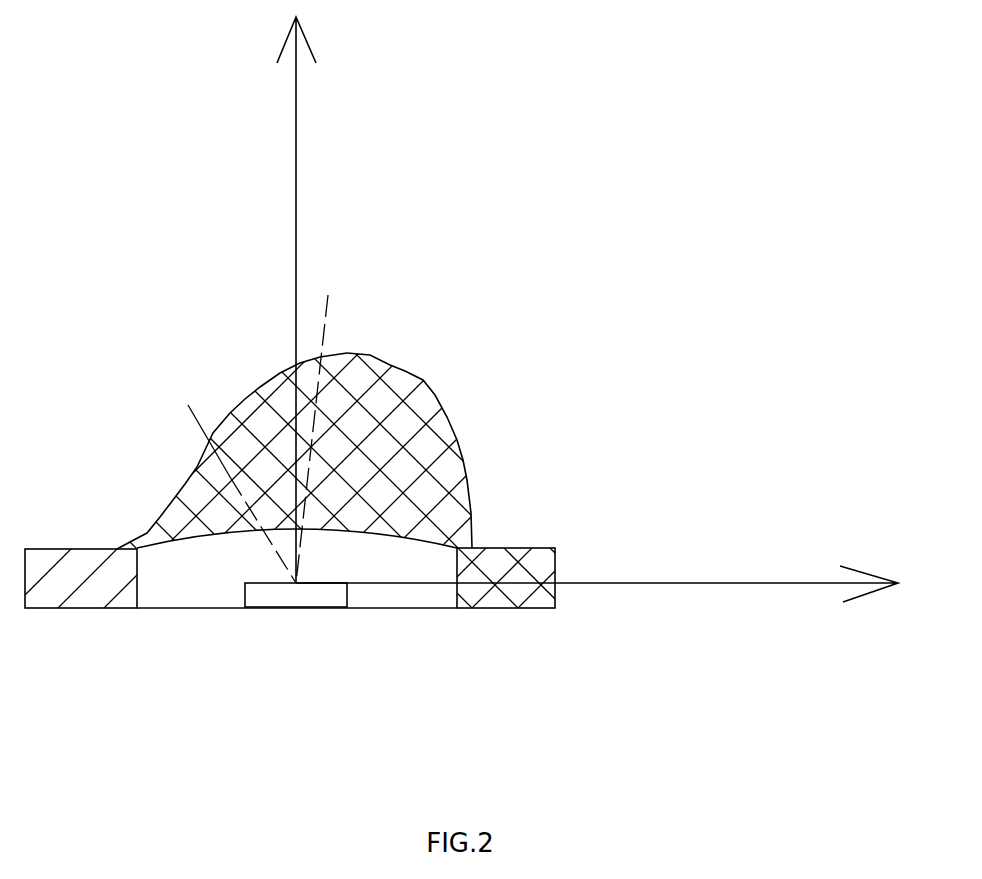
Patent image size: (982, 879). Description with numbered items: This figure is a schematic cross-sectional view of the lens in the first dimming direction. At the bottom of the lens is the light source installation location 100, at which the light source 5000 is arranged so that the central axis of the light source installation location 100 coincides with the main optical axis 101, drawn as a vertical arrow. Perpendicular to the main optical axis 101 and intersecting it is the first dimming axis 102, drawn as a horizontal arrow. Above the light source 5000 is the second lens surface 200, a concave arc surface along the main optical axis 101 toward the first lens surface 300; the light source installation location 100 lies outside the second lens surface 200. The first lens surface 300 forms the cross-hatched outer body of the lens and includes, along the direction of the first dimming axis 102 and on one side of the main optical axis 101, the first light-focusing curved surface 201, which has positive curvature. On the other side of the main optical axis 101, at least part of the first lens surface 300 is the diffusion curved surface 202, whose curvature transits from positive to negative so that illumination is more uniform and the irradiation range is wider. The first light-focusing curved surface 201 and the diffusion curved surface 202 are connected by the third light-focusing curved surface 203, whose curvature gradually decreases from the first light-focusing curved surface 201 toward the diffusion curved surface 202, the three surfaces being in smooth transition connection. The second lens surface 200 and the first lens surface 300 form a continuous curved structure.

The light source installation location 100 is at (219, 592).
The light source 5000 is at (323, 592).
The second lens surface 200 is at (375, 537).
The first lens surface 300 is at (459, 416).
The first light-focusing curved surface 201 is at (409, 420).
The diffusion curved surface 202 is at (177, 493).
The third light-focusing curved surface 203 is at (245, 403).
The main optical axis 101 is at (296, 155).
The first dimming axis 102 is at (710, 584).